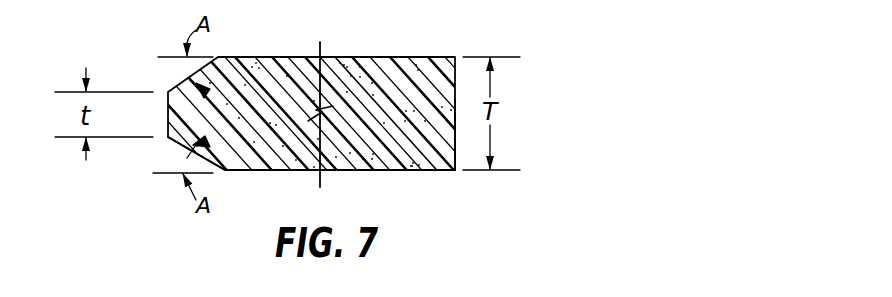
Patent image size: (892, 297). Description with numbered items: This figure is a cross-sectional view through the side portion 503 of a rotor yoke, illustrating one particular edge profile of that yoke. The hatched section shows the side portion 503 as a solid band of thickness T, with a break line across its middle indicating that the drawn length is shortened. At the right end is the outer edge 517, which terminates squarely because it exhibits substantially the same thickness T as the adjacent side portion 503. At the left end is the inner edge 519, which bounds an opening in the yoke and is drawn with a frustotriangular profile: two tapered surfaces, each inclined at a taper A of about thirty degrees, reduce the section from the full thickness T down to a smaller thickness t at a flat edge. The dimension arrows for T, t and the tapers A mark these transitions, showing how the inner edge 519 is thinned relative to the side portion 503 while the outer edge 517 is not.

The side portion 503 is at (348, 57).
The outer edge 517 is at (455, 143).
The inner edge 519 is at (175, 140).